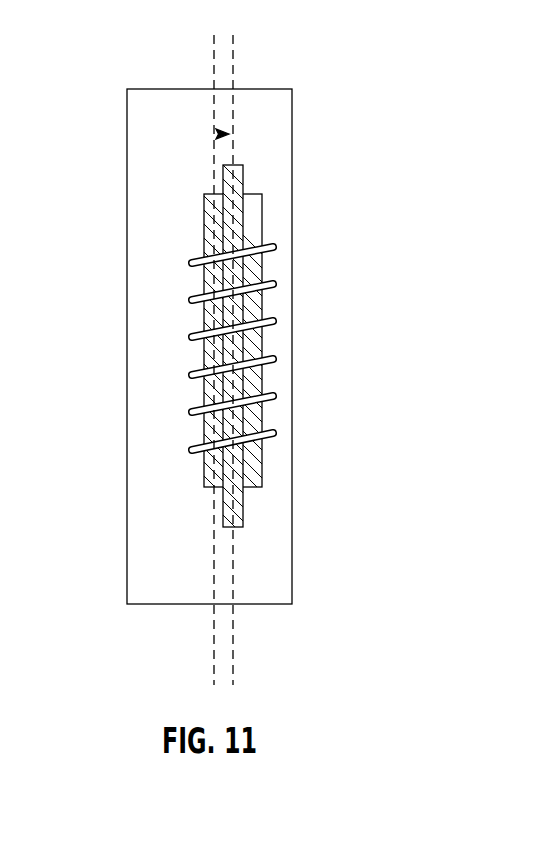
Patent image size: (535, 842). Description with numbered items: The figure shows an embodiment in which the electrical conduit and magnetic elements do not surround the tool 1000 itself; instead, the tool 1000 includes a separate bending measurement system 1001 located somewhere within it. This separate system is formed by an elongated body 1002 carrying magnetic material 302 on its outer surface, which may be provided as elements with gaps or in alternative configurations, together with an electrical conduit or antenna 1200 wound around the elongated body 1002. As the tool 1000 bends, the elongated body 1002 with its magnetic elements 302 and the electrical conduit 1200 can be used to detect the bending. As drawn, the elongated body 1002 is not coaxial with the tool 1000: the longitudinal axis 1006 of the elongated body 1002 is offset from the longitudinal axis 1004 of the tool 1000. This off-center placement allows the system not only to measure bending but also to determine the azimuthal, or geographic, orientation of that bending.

The tool 1000 is at (253, 89).
The bending measurement system 1001 is at (218, 134).
The elongated body 1002 is at (233, 166).
The magnetic material 302 is at (204, 194).
The electrical conduit 1200 is at (268, 398).
The longitudinal axis of the tool 1004 is at (212, 615).
The longitudinal axis of the elongated body 1006 is at (233, 647).